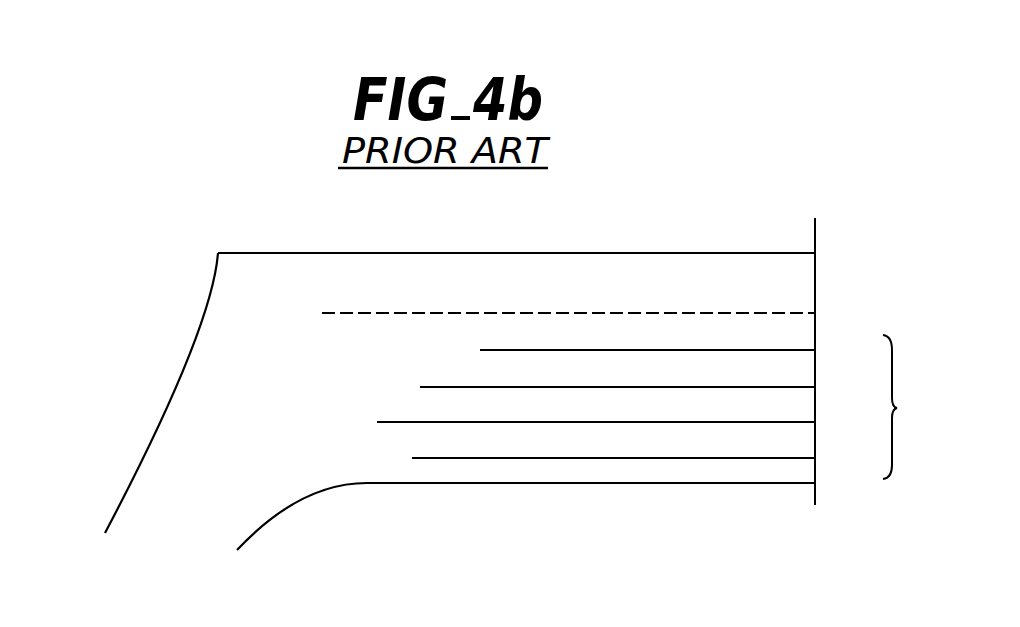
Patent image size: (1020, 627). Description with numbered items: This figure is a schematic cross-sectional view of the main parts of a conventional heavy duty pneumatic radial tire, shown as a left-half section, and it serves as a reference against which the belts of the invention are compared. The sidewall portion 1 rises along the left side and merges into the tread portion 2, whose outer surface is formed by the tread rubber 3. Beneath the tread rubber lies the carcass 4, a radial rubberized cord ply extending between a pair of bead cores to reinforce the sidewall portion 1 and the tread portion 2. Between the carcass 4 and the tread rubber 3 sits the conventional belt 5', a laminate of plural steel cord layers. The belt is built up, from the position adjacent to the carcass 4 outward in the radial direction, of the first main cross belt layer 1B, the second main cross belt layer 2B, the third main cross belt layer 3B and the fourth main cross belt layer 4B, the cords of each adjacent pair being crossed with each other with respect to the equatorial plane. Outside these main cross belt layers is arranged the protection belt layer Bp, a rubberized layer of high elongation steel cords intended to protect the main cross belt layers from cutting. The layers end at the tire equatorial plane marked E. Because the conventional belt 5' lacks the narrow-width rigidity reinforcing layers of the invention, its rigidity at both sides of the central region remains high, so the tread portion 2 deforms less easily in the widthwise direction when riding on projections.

The sidewall portion 1 is at (96, 418).
The tread portion 2 is at (441, 254).
The tread rubber 3 is at (544, 271).
The carcass 4 is at (366, 486).
The end plane E is at (816, 234).
The protection belt layer Bp is at (592, 316).
The fourth main cross belt layer 4B is at (671, 354).
The third main cross belt layer 3B is at (641, 392).
The second main cross belt layer 2B is at (619, 429).
The first main cross belt layer 1B is at (633, 464).
The conventional belt 5' is at (906, 407).